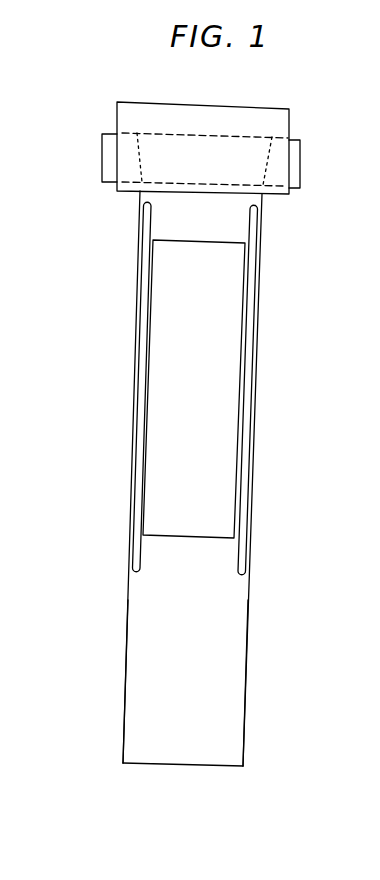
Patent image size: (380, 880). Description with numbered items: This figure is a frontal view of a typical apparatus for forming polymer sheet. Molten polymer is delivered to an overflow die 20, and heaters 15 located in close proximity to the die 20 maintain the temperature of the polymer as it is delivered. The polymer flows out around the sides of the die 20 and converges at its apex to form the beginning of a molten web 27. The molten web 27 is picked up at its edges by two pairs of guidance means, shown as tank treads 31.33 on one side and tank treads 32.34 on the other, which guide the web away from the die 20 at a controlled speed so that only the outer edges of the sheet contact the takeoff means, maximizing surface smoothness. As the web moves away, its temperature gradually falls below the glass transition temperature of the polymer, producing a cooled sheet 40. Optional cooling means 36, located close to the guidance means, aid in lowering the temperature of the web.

The heaters 15 is at (213, 105).
The overflow die 20 is at (301, 166).
The molten web 27 is at (220, 211).
The tank treads 31.33 is at (137, 308).
The tank treads 32.34 is at (260, 312).
The cooling means 36 is at (208, 463).
The cooled sheet 40 is at (138, 660).